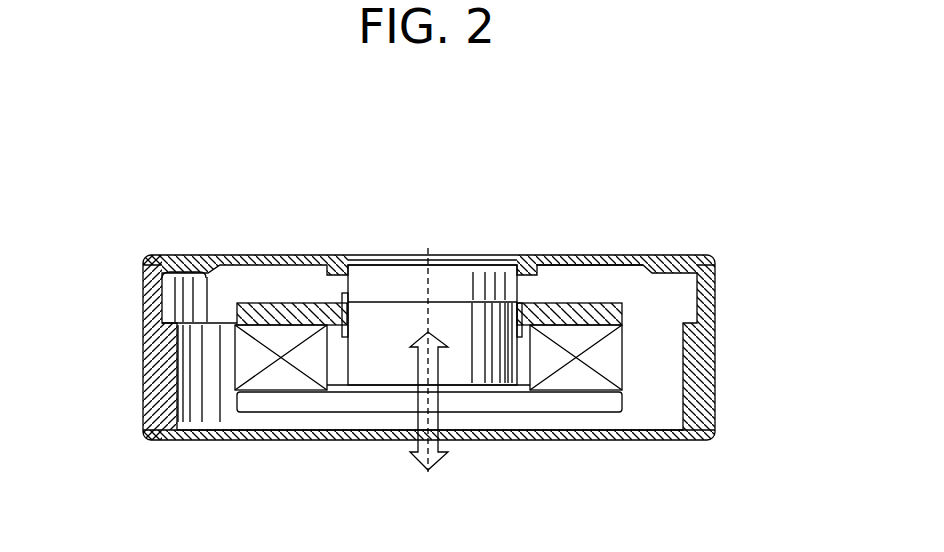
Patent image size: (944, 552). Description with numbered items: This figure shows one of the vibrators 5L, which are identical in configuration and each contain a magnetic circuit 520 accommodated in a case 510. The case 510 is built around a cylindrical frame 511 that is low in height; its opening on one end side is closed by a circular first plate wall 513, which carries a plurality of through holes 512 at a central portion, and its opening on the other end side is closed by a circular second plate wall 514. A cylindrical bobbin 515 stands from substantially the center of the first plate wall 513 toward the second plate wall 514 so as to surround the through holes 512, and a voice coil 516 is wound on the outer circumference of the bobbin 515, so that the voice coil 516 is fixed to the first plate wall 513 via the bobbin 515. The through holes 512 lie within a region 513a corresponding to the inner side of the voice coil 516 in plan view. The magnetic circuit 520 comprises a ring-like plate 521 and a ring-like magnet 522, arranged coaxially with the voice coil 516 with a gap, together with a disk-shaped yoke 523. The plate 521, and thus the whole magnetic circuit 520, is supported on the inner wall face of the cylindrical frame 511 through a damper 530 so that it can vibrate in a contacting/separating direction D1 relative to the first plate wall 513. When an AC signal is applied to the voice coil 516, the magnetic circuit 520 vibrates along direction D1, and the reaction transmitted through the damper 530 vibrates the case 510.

The vibrator 5L is at (457, 158).
The case 510 is at (136, 232).
The cylindrical frame 511 is at (147, 368).
The through holes 512 is at (360, 255).
The first plate wall 513 is at (235, 255).
The region 513a is at (513, 247).
The second plate wall 514 is at (255, 443).
The bobbin 515 is at (337, 357).
The voice coil 516 is at (573, 255).
The magnetic circuit 520 is at (787, 325).
The plate 521 is at (587, 300).
The magnet 522 is at (622, 360).
The yoke 523 is at (622, 400).
The damper 530 is at (147, 310).
The contacting/separating direction D1 is at (445, 462).